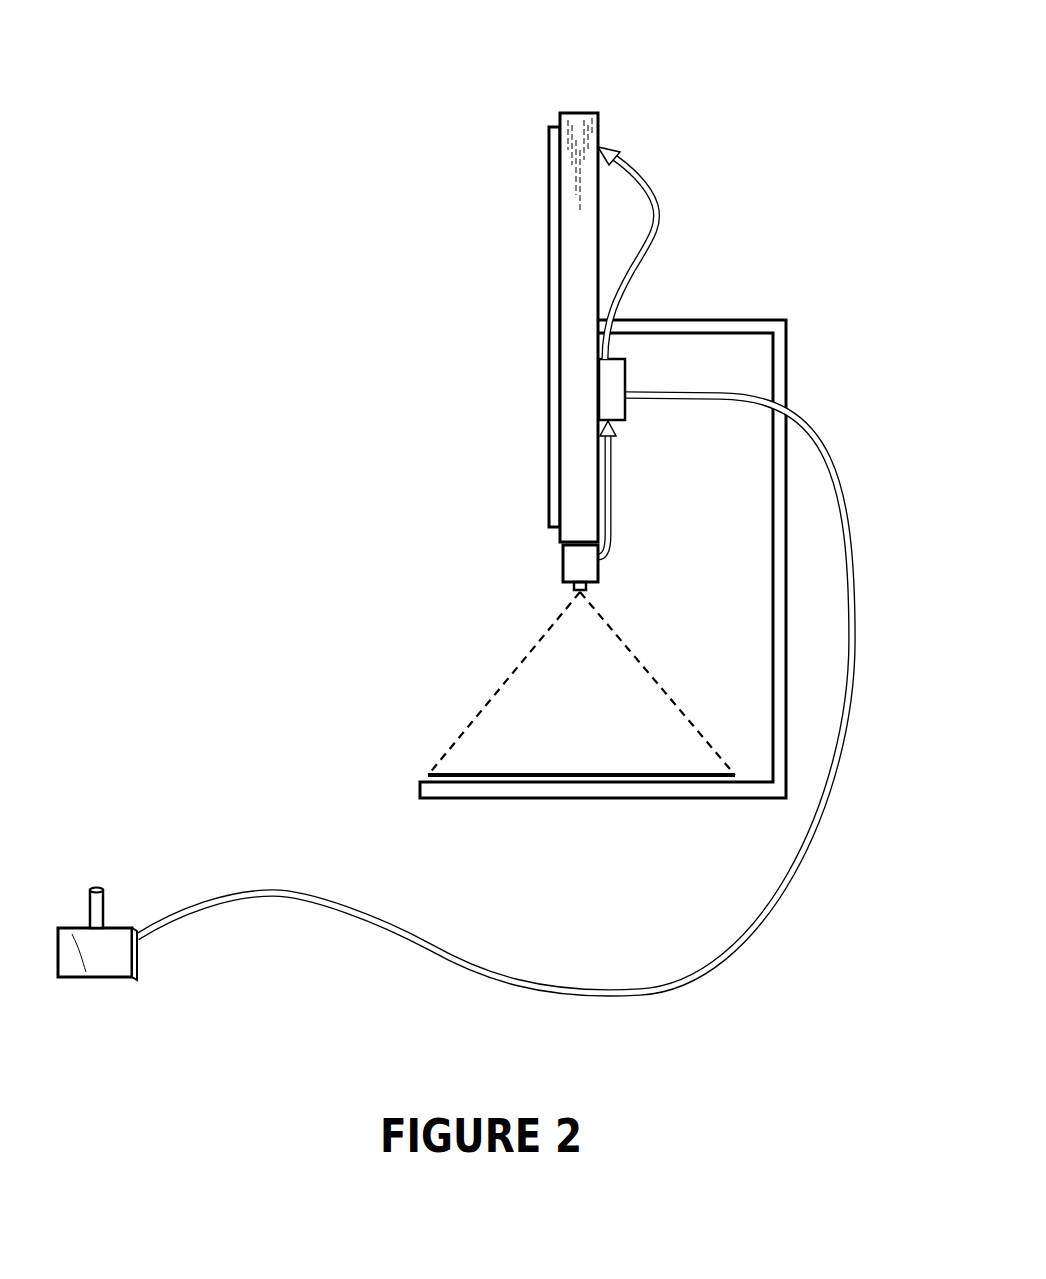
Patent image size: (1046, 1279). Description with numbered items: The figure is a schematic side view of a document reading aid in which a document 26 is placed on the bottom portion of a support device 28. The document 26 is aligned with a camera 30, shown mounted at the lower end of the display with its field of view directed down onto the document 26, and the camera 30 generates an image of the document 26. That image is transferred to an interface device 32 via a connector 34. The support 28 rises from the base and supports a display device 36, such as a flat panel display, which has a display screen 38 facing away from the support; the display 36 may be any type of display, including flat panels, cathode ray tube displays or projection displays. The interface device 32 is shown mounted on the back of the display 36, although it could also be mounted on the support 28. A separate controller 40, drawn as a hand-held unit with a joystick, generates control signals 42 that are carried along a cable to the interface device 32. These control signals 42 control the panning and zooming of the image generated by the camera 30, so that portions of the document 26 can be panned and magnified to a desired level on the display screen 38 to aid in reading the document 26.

The document 26 is at (477, 775).
The support device 28 is at (833, 326).
The camera 30 is at (562, 568).
The interface device 32 is at (626, 408).
The connector 34 is at (612, 527).
The display device 36 is at (590, 113).
The display screen 38 is at (550, 334).
The controller 40 is at (137, 965).
The control signals 42 is at (700, 990).